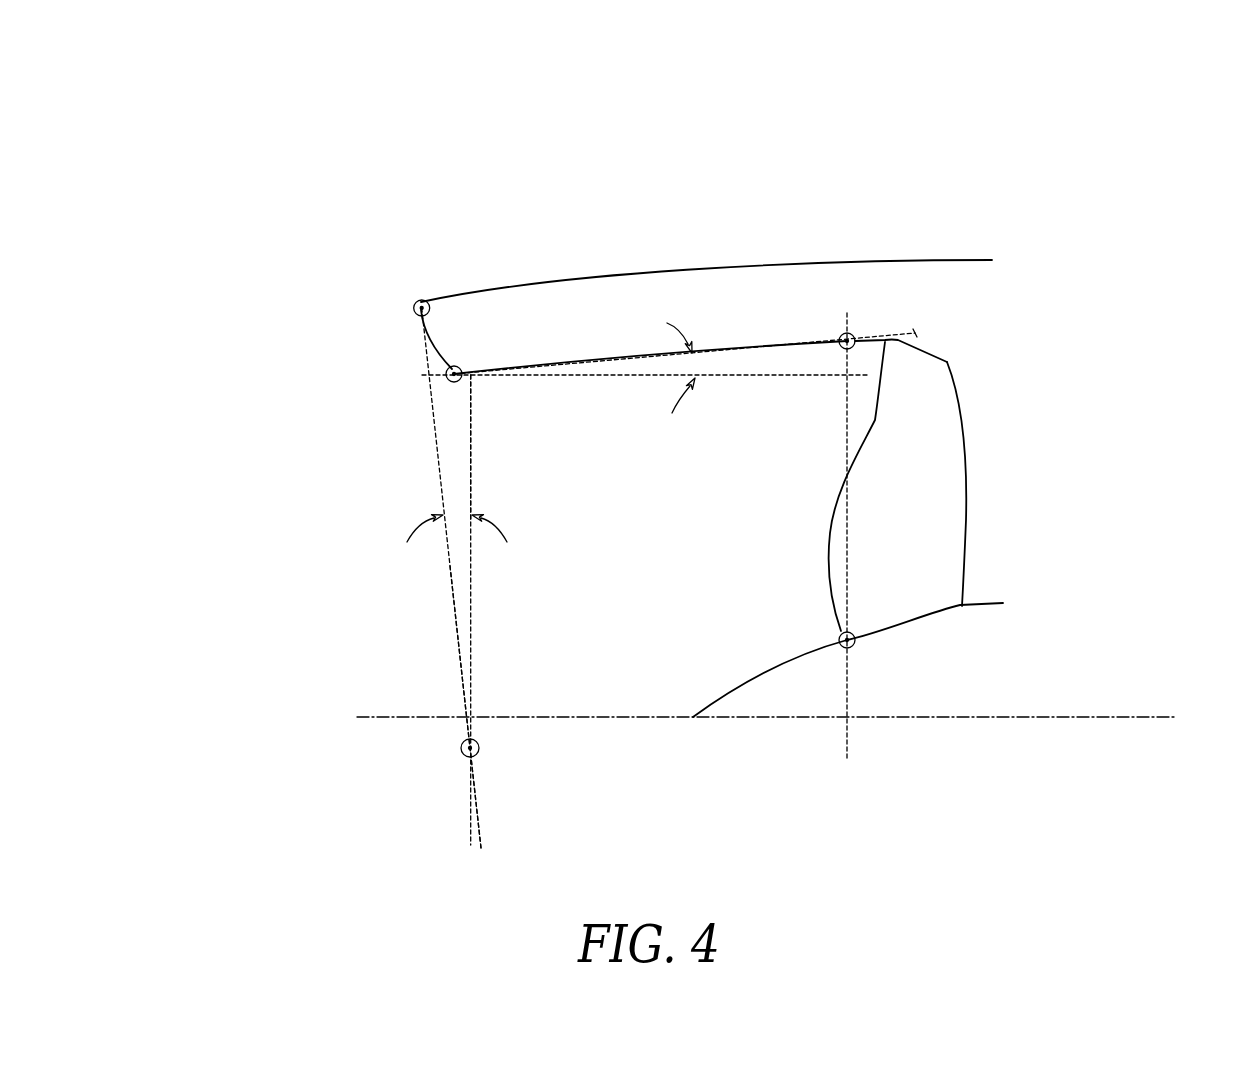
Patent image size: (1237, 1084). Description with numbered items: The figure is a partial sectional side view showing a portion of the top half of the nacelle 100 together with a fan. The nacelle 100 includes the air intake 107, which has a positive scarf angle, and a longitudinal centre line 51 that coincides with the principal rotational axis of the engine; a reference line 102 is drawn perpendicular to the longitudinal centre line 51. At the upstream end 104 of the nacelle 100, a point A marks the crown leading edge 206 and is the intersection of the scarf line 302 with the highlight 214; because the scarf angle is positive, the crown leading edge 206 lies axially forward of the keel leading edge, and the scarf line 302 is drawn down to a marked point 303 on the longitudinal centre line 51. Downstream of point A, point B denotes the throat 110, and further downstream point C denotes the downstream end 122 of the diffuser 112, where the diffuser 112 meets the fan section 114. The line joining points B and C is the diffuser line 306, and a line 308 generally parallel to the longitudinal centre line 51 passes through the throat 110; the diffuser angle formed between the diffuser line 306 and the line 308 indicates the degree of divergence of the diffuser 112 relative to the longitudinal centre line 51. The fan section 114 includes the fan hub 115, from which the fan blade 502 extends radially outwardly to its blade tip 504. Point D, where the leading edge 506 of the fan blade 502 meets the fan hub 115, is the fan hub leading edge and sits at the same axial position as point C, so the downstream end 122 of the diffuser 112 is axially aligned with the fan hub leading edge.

The nacelle 100 is at (1097, 120).
The crown leading edge 206 is at (413, 309).
The throat 110 is at (453, 365).
The reference line 102 is at (470, 404).
The upstream end 104 is at (417, 398).
The scarf line 302 is at (432, 442).
The air intake 107 is at (507, 468).
The highlight 214 is at (450, 582).
The lower pivot 303 is at (463, 753).
The diffuser line 306 is at (773, 350).
The line 308 is at (853, 373).
The blade tip 504 is at (915, 337).
The fan blade 502 is at (933, 427).
The downstream end 122 is at (848, 418).
The fan section 114 is at (980, 481).
The diffuser 112 is at (623, 382).
The leading edge 506 is at (826, 570).
The fan hub 115 is at (892, 690).
The longitudinal centre line 51 is at (1131, 718).